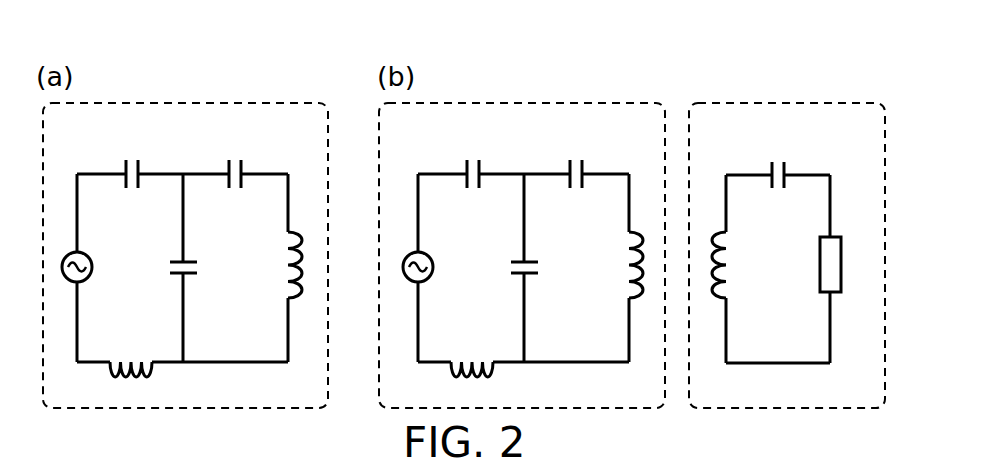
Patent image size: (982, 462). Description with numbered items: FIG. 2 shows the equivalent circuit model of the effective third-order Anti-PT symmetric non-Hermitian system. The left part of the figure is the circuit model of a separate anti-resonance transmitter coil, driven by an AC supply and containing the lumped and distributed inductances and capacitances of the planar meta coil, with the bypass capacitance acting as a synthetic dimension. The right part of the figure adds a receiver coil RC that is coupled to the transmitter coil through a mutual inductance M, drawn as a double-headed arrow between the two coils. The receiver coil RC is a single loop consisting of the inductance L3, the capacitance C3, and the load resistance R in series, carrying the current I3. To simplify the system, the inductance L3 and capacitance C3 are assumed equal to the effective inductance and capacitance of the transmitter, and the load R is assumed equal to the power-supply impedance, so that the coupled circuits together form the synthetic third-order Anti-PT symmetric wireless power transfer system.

The capacitance of the receiver coil C3 is at (775, 161).
The inductance of the receiver coil L3 is at (736, 265).
The load resistance R is at (842, 264).
The current I3 is at (802, 202).
The mutual inductance M is at (717, 212).
The receiver coil RC is at (787, 255).